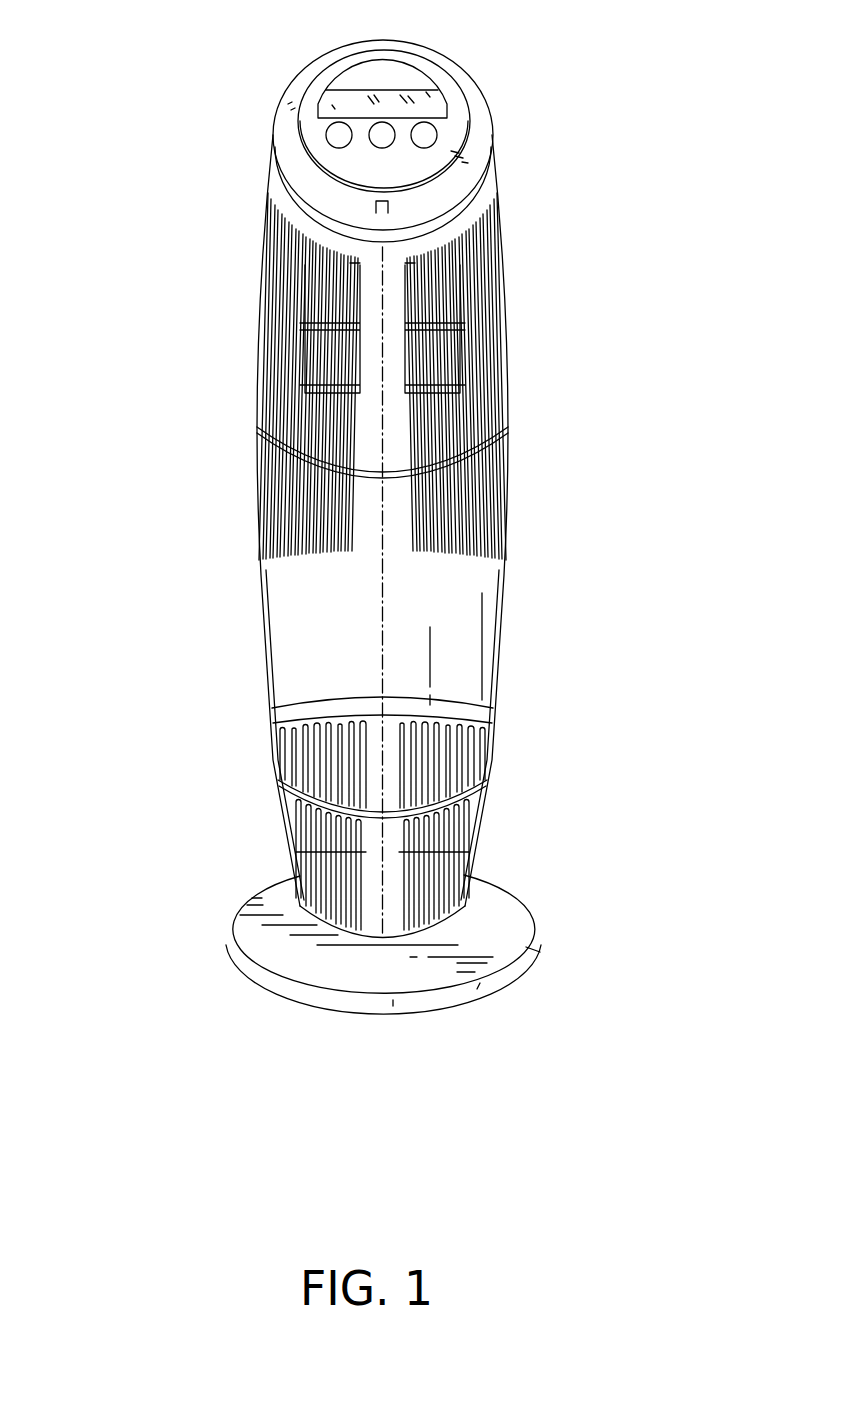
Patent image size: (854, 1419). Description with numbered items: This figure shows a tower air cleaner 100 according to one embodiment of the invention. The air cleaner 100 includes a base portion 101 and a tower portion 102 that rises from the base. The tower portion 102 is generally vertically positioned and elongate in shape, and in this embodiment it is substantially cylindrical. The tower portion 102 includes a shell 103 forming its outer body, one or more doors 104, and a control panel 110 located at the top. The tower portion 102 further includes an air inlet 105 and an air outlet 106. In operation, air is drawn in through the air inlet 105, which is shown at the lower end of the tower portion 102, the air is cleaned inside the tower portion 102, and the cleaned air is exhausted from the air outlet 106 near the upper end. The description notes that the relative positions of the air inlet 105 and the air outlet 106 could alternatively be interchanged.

The tower air cleaner 100 is at (243, 1090).
The base portion 101 is at (247, 960).
The tower portion 102 is at (148, 36).
The shell 103 is at (270, 197).
The door 104 is at (490, 632).
The air inlet 105 is at (535, 742).
The air outlet 106 is at (542, 171).
The control panel 110 is at (453, 76).